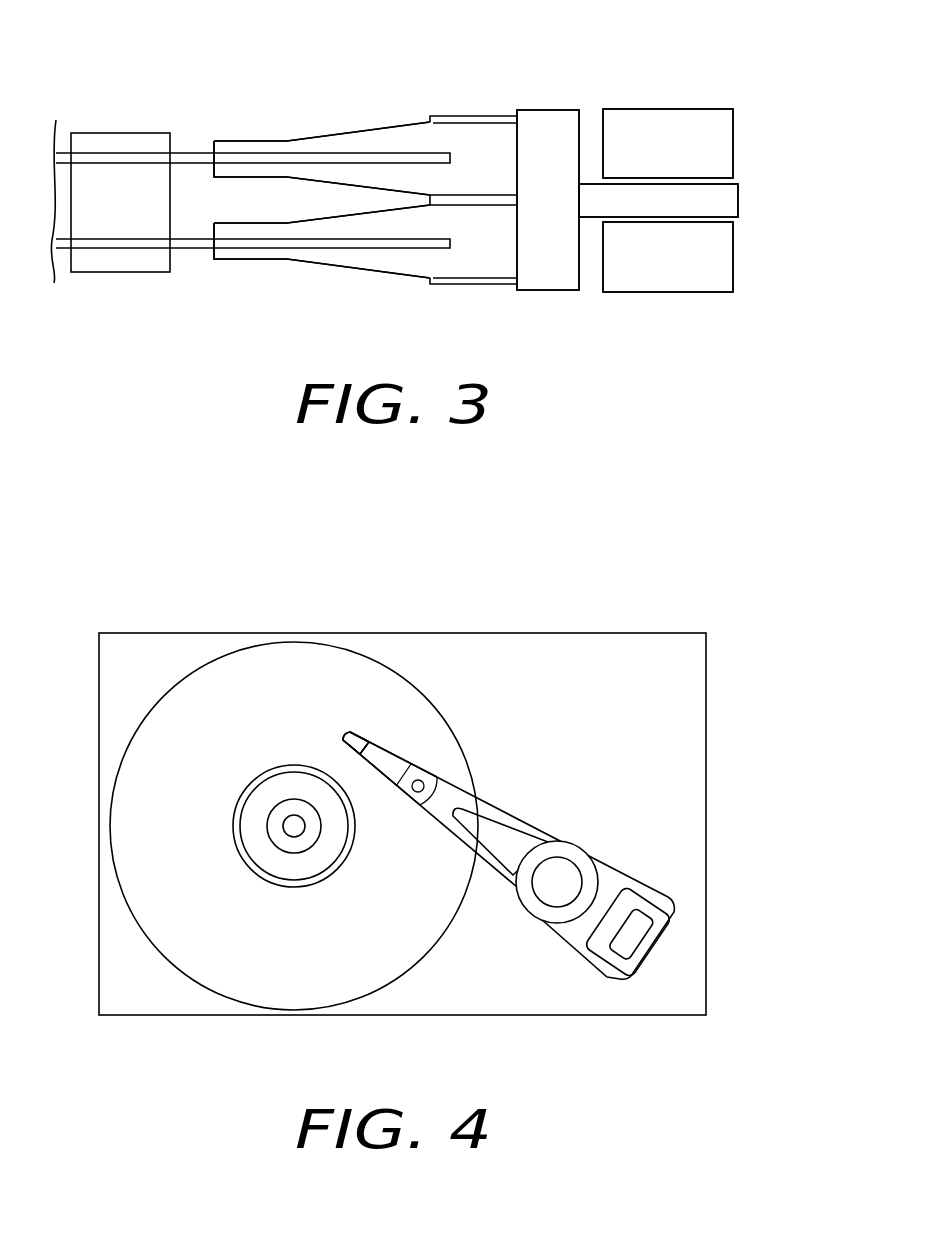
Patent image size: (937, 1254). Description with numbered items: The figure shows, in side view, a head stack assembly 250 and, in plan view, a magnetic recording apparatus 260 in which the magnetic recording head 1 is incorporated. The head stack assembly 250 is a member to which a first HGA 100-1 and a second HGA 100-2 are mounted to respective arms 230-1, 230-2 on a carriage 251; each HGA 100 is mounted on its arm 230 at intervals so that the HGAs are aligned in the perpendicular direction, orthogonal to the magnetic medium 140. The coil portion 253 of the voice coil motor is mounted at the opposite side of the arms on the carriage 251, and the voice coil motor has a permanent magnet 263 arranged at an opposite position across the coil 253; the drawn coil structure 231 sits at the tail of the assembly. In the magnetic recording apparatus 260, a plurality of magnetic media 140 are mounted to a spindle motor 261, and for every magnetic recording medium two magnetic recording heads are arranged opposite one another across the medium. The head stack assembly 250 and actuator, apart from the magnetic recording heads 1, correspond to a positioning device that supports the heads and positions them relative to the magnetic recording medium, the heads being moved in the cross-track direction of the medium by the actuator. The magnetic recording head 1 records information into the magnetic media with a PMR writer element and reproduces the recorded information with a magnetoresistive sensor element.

In FIG. 3, the magnetic recording head 1 is at (208, 140).
In FIG. 4, the magnetic recording head 1 is at (356, 730).
In FIG. 4, the HGA 100 is at (400, 780).
In FIG. 3, the first HGA 100-1 is at (302, 148).
In FIG. 3, the second HGA 100-2 is at (302, 252).
In FIG. 3, the magnetic medium 140 is at (182, 152).
In FIG. 4, the magnetic medium 140 is at (227, 998).
In FIG. 4, the arm 230 is at (518, 848).
In FIG. 3, the first arm 230-1 is at (431, 117).
In FIG. 3, the second arm 230-2 is at (433, 286).
In FIG. 4, the coil 231 is at (655, 946).
In FIG. 3, the head stack assembly 250 is at (557, 85).
In FIG. 4, the head stack assembly 250 is at (568, 943).
In FIG. 3, the carriage 251 is at (550, 278).
In FIG. 4, the carriage 251 is at (567, 842).
In FIG. 3, the coil portion of the voice coil motor 253 is at (727, 199).
In FIG. 4, the magnetic recording apparatus 260 is at (438, 620).
In FIG. 3, the spindle motor 261 is at (110, 143).
In FIG. 4, the spindle motor 261 is at (295, 836).
In FIG. 3, the permanent magnet 263 is at (667, 123).